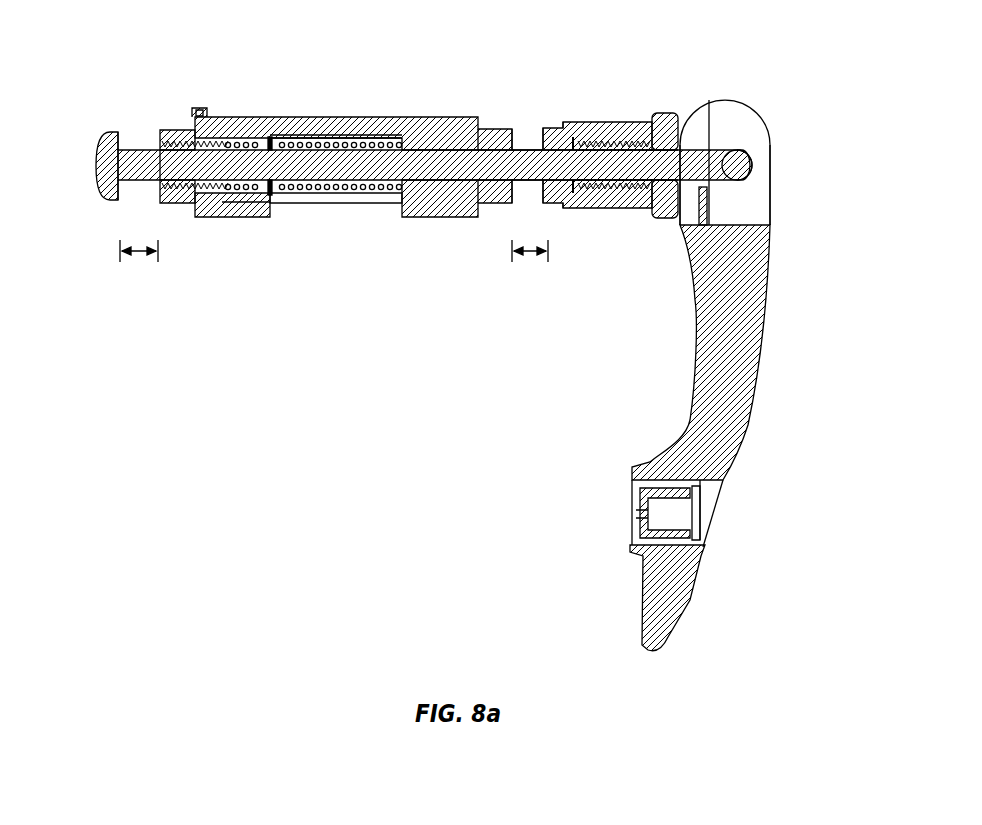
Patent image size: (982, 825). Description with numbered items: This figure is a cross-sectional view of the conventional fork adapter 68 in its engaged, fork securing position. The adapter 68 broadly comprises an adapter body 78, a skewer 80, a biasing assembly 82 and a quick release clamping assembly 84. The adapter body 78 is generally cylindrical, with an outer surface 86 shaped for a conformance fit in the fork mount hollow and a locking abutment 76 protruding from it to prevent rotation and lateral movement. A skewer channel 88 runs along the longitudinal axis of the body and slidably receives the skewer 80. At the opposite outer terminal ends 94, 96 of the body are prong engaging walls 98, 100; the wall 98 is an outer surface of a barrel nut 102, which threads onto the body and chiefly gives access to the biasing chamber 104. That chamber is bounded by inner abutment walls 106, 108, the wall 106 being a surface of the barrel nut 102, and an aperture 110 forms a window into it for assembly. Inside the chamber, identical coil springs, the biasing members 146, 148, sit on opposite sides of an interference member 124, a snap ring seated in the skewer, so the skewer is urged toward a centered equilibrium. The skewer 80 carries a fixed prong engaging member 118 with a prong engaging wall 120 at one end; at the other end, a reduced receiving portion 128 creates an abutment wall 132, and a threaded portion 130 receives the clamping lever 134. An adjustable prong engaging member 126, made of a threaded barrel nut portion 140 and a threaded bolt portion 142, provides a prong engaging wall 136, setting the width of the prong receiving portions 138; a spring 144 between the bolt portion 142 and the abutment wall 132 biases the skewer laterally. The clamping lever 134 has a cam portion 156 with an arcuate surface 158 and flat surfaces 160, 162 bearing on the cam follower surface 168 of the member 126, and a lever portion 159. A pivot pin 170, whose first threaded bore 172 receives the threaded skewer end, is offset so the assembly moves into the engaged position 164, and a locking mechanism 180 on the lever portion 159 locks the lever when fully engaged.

The conventional fork adapter 68 is at (645, 46).
The locking abutment 76 is at (201, 108).
The adapter body 78 is at (277, 116).
The skewer 80 is at (337, 143).
The biasing assembly 82 is at (312, 220).
The quick release clamping assembly 84 is at (825, 182).
The outer surface 86 is at (470, 212).
The skewer channel 88 is at (195, 200).
The outer terminal end 94 is at (160, 131).
The outer terminal end 96 is at (514, 140).
The prong engaging wall 98 is at (157, 196).
The prong engaging wall 100 is at (523, 184).
The barrel nut 102 is at (194, 109).
The biasing chamber 104 is at (350, 205).
The inner abutment wall 106 is at (210, 214).
The inner abutment wall 108 is at (398, 211).
The aperture 110 is at (284, 220).
The fixed prong engaging member 118 is at (95, 172).
The prong engaging wall 120 is at (127, 202).
The interference member 124 is at (298, 117).
The adjustable prong engaging member 126 is at (588, 123).
The receiving portion 128 is at (647, 209).
The threaded portion 130 is at (753, 157).
The abutment wall 132 is at (625, 209).
The clamping lever 134 is at (734, 308).
The prong engaging wall 136 is at (546, 134).
The prong receiving portion 138 is at (140, 258).
The threaded barrel nut portion 140 is at (580, 209).
The threaded bolt portion 142 is at (665, 219).
The spring 144 is at (651, 114).
The biasing member 146 is at (234, 138).
The biasing member 148 is at (370, 163).
The cam portion 156 is at (827, 101).
The arcuate surface 158 is at (732, 100).
The lever portion 159 is at (771, 399).
The flat surface 160 is at (681, 192).
The flat surface 162 is at (772, 163).
The engaged position 164 is at (793, 445).
The cam follower surface 168 is at (684, 130).
The pivot pin 170 is at (740, 187).
The first threaded bore 172 is at (738, 150).
The locking mechanism 180 is at (676, 510).